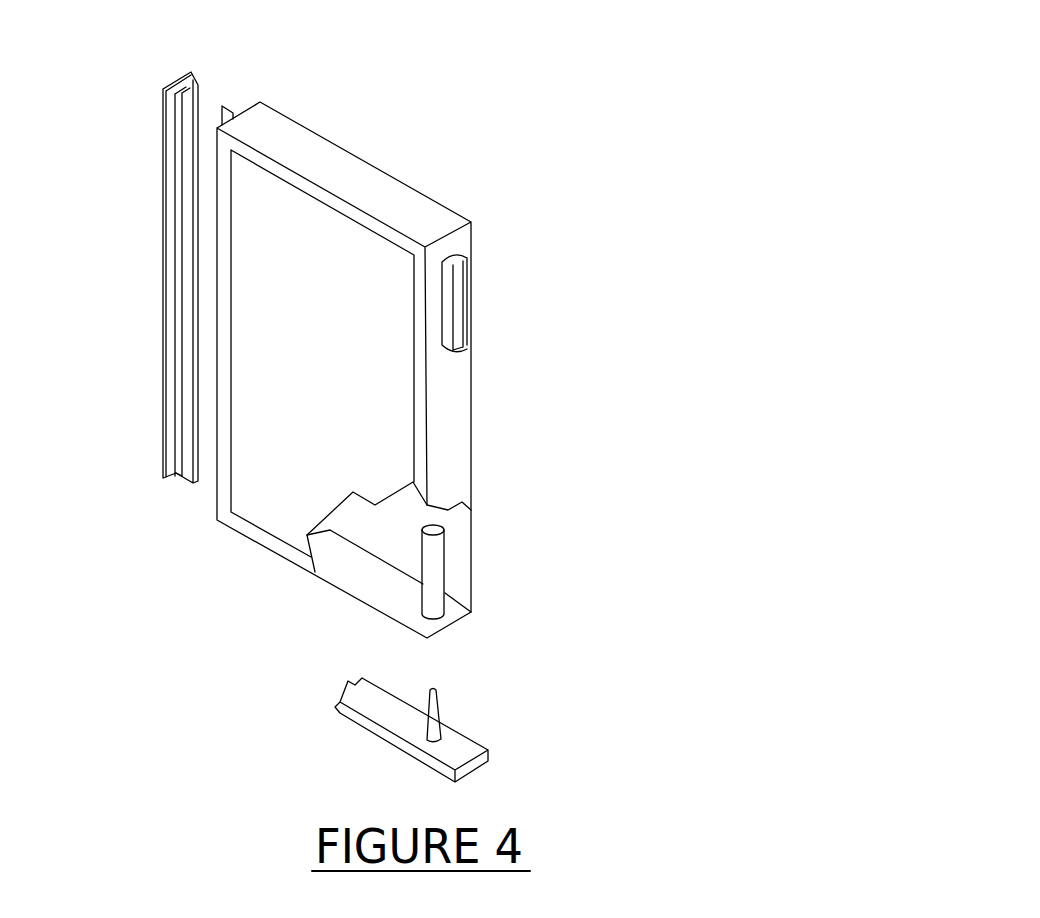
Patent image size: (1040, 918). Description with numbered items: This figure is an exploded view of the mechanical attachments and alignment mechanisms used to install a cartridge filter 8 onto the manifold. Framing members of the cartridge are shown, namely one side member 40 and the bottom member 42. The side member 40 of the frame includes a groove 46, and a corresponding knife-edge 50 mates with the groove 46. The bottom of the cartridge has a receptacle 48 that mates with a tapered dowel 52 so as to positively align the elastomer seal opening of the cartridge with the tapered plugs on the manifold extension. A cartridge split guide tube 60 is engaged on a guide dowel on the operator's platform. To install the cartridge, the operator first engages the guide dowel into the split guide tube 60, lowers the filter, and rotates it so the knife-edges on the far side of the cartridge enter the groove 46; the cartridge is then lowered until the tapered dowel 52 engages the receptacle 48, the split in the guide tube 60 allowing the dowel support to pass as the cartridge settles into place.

The cartridge filter 8 is at (562, 370).
The side framing member 40 is at (100, 263).
The bottom framing member 42 is at (330, 743).
The groove 46 is at (283, 250).
The receptacle 48 is at (720, 563).
The knife-edge 50 is at (359, 94).
The tapered dowel 52 is at (231, 725).
The cartridge split guide tube 60 is at (700, 297).